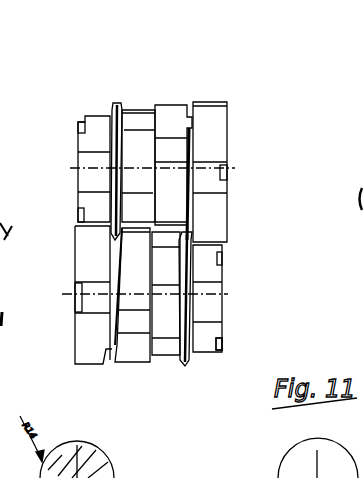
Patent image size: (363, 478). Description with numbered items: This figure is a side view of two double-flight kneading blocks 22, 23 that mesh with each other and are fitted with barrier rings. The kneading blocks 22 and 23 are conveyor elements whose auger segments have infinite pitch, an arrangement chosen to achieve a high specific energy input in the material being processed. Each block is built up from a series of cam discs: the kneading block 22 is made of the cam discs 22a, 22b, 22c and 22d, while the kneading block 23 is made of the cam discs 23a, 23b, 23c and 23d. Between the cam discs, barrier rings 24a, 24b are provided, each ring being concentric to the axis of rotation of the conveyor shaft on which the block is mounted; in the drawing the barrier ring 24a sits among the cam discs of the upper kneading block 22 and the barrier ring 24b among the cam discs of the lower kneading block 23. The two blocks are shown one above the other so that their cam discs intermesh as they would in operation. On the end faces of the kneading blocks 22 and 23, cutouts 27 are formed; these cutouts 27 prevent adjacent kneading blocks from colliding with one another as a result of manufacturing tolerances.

The kneading block 22 is at (238, 153).
The cam disc 22a is at (220, 122).
The cam disc 22b is at (172, 103).
The cam disc 22c is at (132, 101).
The cam disc 22d is at (80, 141).
The kneading block 23 is at (238, 276).
The cam disc 23a is at (222, 332).
The cam disc 23b is at (159, 363).
The cam disc 23c is at (134, 365).
The cam disc 23d is at (75, 366).
The barrier ring 24a is at (110, 104).
The barrier ring 24b is at (188, 366).
The cutout 27 is at (218, 352).